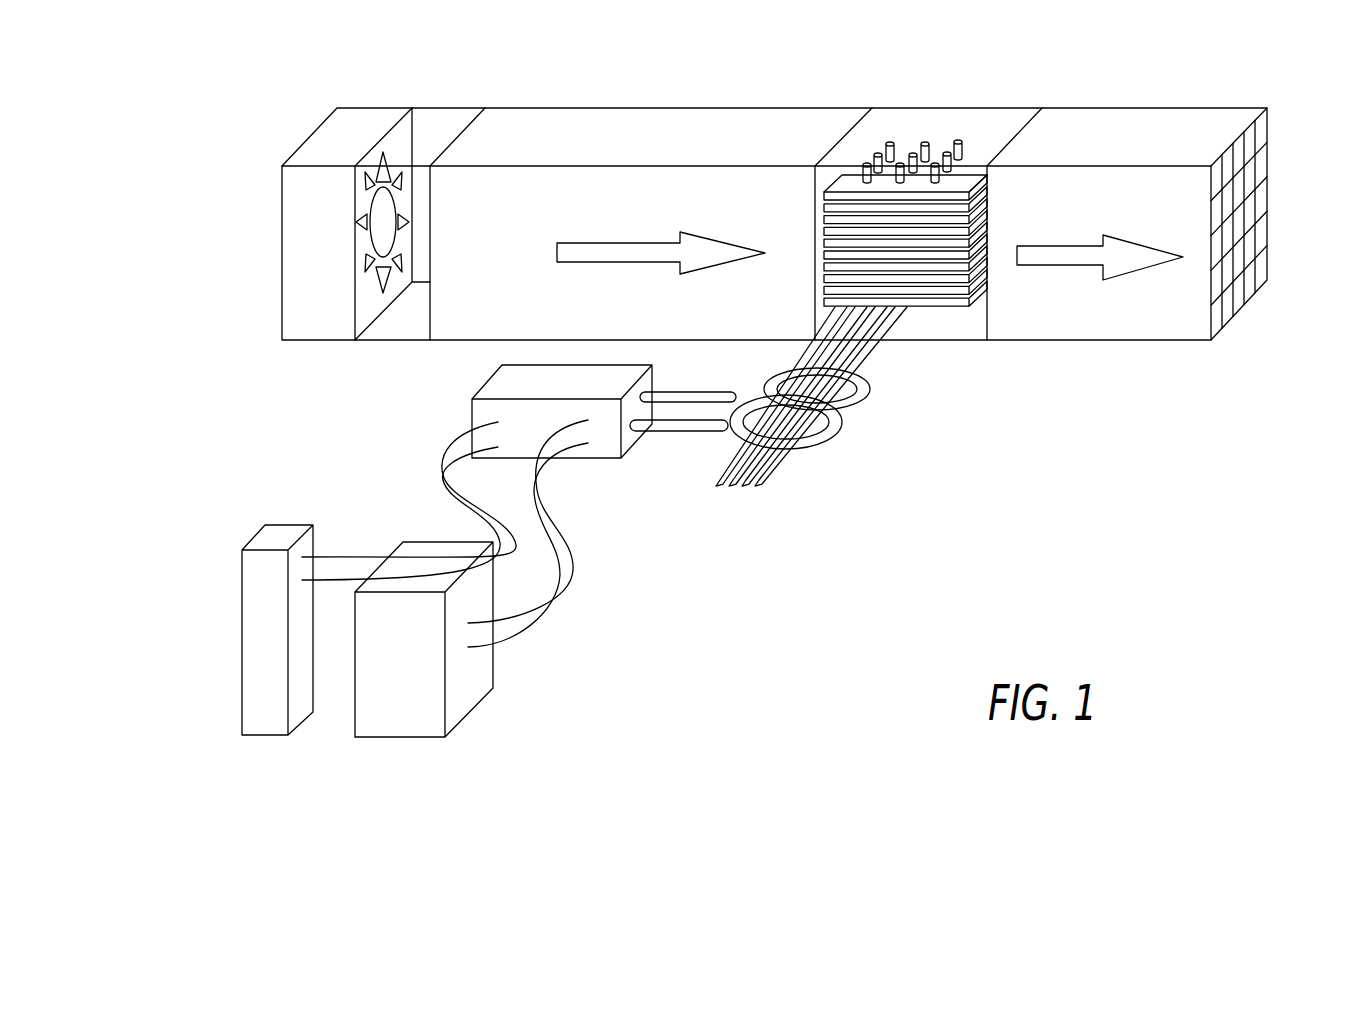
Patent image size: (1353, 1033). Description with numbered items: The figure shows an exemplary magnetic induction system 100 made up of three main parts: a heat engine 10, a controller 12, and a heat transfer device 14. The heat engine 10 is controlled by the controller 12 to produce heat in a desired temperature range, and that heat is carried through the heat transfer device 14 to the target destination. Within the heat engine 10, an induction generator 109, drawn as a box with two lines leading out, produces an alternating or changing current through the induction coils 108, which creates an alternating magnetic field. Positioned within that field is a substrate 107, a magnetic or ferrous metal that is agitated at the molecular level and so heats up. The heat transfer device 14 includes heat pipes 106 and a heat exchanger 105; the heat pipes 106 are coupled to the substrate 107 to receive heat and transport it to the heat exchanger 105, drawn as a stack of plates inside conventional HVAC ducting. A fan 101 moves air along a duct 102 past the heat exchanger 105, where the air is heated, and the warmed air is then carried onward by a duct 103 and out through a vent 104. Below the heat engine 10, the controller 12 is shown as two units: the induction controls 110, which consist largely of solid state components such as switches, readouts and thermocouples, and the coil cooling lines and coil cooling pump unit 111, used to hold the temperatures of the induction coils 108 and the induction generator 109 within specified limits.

The air treatment system 100 is at (166, 157).
The fan 101 is at (298, 205).
The duct 102 is at (618, 115).
The duct 103 is at (1103, 108).
The vent 104 is at (1256, 219).
The heat exchanger 105 is at (947, 310).
The heat pipes 106 is at (925, 142).
The substrate 107 is at (788, 443).
The induction coils 108 is at (850, 407).
The induction generator 109 is at (489, 382).
The induction controls 110 is at (242, 653).
The coil cooling lines and coil cooling pump unit 111 is at (473, 670).
The heat engine 10 is at (877, 512).
The controller 12 is at (525, 788).
The heat transfer device 14 is at (1097, 192).